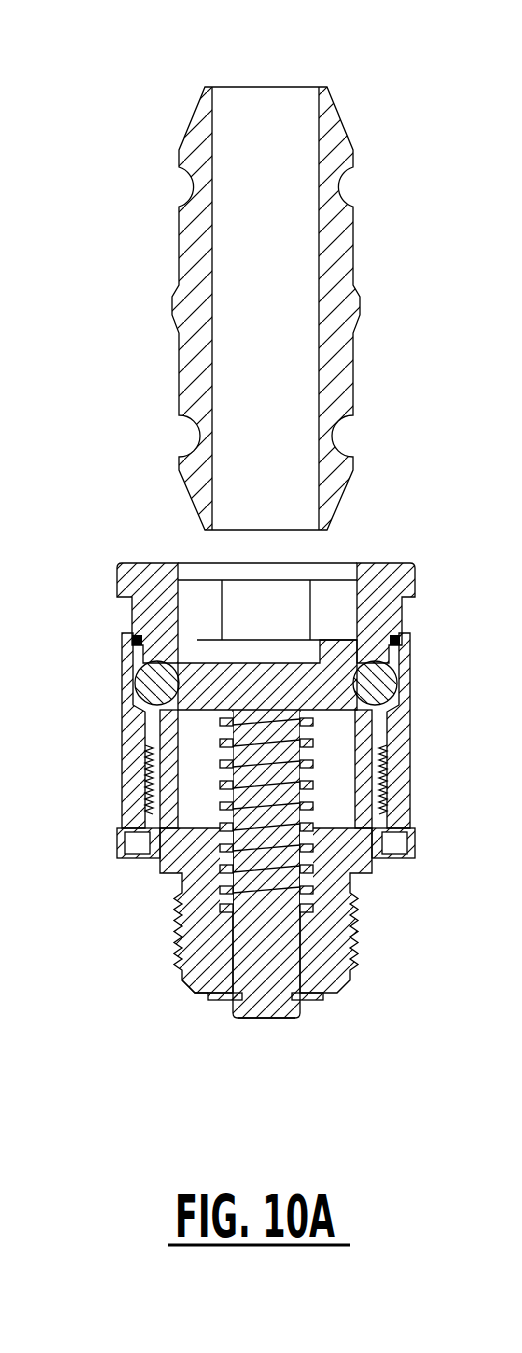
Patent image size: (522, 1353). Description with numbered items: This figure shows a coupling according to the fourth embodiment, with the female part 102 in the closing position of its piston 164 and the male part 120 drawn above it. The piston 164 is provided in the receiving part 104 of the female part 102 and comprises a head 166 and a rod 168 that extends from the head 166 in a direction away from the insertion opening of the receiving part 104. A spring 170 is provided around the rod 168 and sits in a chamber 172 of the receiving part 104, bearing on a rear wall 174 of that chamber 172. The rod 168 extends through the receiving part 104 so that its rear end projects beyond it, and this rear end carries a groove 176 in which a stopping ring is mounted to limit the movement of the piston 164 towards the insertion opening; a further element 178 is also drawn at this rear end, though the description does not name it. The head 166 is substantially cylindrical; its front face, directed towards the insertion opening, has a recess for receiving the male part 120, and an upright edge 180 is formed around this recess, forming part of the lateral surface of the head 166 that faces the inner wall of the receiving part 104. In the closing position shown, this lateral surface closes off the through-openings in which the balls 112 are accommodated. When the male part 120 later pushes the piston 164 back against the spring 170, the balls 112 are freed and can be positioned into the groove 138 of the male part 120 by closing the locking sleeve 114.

The female part 102 is at (69, 608).
The receiving part 104 is at (180, 853).
The balls 112 is at (135, 683).
The locking sleeve 114 is at (133, 808).
The male part 120 is at (414, 172).
The groove 138 is at (382, 405).
The piston 164 is at (367, 776).
The head 166 is at (318, 687).
The rod 168 is at (300, 968).
The spring 170 is at (303, 740).
The chamber 172 is at (223, 893).
The rear wall 174 is at (190, 985).
The groove 176 is at (272, 1018).
The washer 178 is at (226, 1000).
The upright edge 180 is at (183, 660).